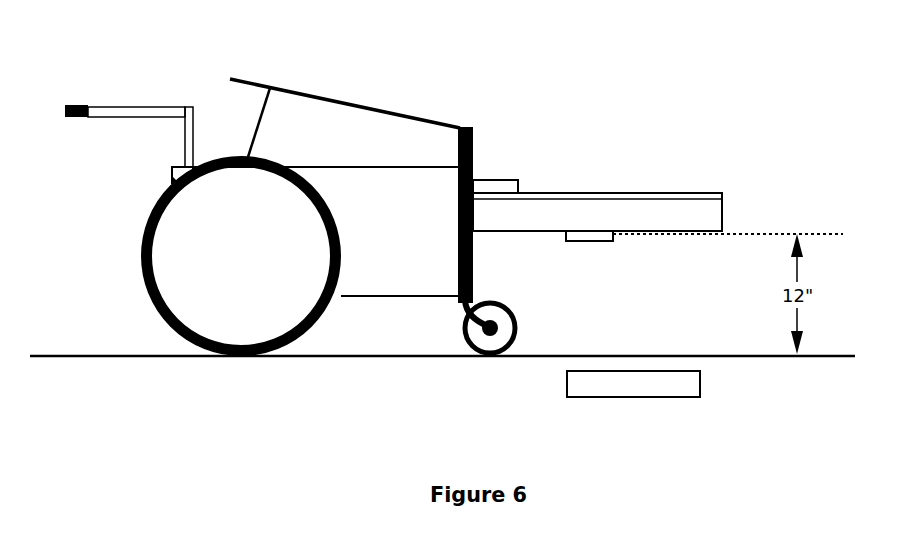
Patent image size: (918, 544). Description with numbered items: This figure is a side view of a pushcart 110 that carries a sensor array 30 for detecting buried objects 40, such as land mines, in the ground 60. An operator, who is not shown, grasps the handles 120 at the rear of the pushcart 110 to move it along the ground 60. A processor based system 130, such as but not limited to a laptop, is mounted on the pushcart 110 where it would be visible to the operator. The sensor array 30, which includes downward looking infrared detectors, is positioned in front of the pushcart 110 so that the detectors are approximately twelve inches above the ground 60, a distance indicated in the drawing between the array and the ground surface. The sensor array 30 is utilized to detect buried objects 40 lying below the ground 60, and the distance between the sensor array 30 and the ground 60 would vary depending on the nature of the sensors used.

The sensor array 30 is at (688, 190).
The buried objects 40 is at (563, 387).
The ground 60 is at (768, 357).
The pushcart 110 is at (427, 115).
The handles 120 is at (93, 116).
The processor based system 130 is at (257, 115).